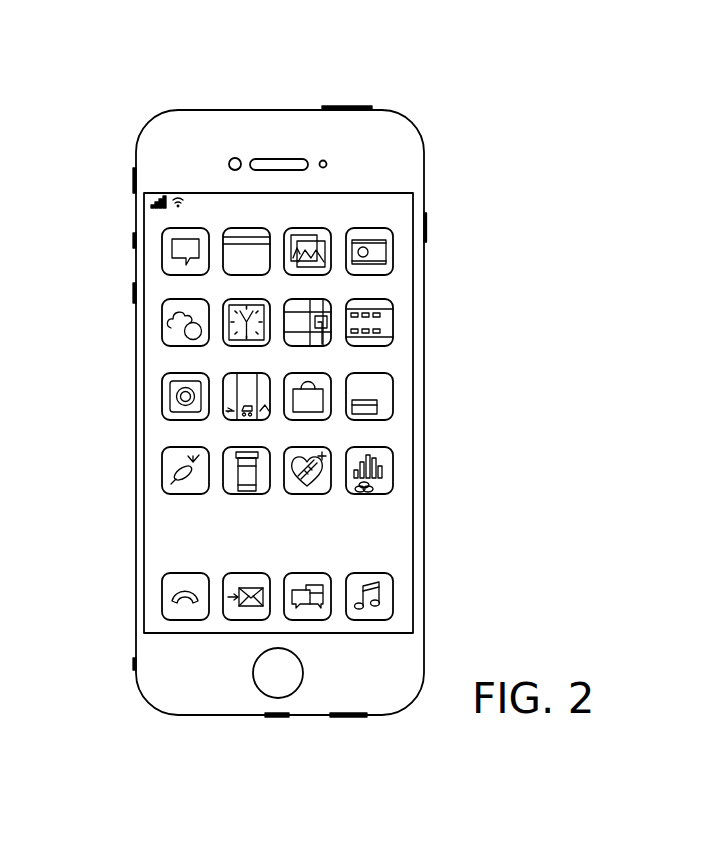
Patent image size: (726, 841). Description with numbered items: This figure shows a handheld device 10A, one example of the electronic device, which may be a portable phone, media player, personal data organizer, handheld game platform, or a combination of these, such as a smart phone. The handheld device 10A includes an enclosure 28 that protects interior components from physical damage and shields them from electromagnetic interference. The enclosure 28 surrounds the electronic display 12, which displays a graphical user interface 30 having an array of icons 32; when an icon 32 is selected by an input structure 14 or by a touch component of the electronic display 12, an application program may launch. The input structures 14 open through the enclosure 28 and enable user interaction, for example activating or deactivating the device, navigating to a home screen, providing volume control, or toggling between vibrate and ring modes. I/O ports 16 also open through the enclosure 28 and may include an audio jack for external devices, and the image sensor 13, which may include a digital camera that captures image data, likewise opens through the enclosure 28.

The handheld device 10A is at (127, 101).
The electronic display 12 is at (413, 397).
The image sensor 13 is at (235, 158).
The input structures 14 is at (350, 107).
The I/O ports 16 is at (275, 718).
The enclosure 28 is at (423, 193).
The graphical user interface 30 is at (386, 291).
The icons 32 is at (308, 447).